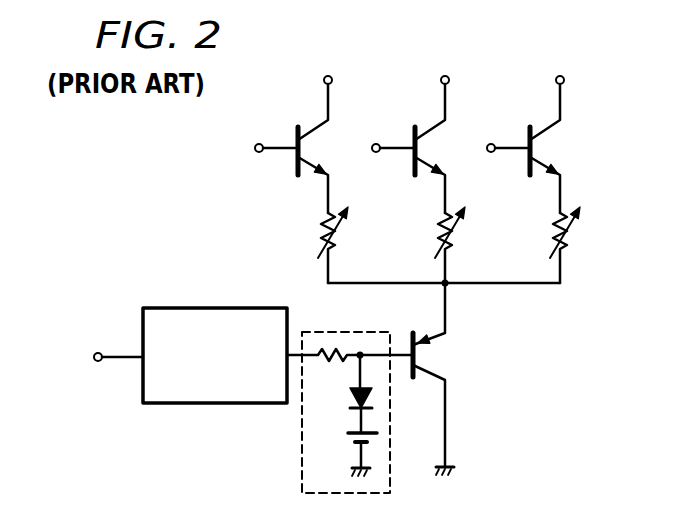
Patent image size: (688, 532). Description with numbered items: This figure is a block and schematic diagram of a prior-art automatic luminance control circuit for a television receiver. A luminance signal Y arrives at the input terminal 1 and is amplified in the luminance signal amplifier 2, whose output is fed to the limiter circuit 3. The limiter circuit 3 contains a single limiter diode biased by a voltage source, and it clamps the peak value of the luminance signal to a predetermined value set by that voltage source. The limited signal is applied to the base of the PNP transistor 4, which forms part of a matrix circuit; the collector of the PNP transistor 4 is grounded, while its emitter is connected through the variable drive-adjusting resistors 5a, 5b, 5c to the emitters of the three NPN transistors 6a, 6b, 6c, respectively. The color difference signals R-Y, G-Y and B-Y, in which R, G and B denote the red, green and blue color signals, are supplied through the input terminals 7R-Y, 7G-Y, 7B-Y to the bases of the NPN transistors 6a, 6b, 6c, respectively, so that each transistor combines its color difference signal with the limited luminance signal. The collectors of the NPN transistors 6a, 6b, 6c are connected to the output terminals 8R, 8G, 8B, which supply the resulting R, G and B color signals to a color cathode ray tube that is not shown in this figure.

The input terminal 1 is at (98, 362).
The luminance signal amplifier 2 is at (245, 404).
The limiter circuit 3 is at (302, 466).
The PNP transistor 4 is at (405, 378).
The variable drive-adjusting resistor 5a is at (318, 242).
The variable drive-adjusting resistor 5b is at (433, 242).
The variable drive-adjusting resistor 5c is at (548, 242).
The NPN transistor 6a is at (294, 164).
The NPN transistor 6b is at (416, 164).
The NPN transistor 6c is at (536, 164).
The input terminal 7R-Y is at (260, 144).
The input terminal 7G-Y is at (377, 144).
The input terminal 7B-Y is at (492, 144).
The output terminal 8R is at (327, 78).
The output terminal 8G is at (444, 78).
The output terminal 8B is at (559, 78).